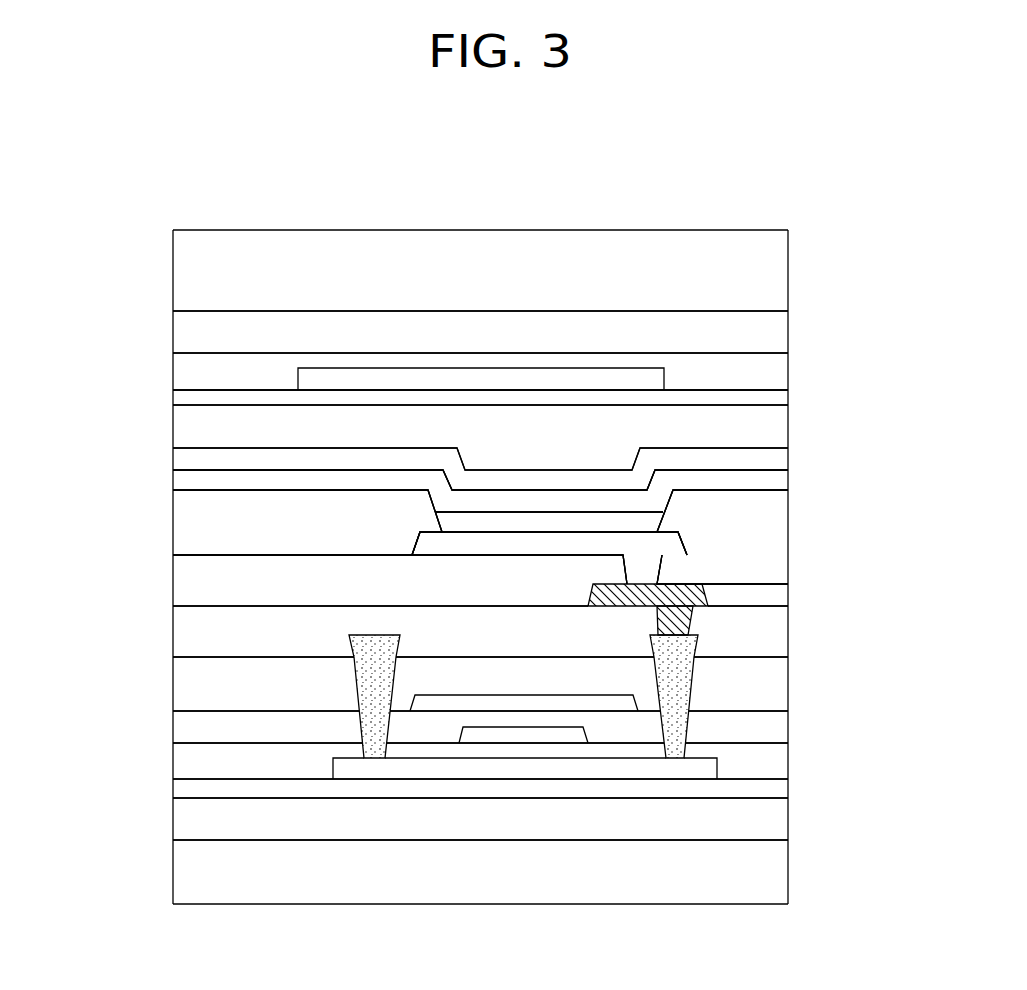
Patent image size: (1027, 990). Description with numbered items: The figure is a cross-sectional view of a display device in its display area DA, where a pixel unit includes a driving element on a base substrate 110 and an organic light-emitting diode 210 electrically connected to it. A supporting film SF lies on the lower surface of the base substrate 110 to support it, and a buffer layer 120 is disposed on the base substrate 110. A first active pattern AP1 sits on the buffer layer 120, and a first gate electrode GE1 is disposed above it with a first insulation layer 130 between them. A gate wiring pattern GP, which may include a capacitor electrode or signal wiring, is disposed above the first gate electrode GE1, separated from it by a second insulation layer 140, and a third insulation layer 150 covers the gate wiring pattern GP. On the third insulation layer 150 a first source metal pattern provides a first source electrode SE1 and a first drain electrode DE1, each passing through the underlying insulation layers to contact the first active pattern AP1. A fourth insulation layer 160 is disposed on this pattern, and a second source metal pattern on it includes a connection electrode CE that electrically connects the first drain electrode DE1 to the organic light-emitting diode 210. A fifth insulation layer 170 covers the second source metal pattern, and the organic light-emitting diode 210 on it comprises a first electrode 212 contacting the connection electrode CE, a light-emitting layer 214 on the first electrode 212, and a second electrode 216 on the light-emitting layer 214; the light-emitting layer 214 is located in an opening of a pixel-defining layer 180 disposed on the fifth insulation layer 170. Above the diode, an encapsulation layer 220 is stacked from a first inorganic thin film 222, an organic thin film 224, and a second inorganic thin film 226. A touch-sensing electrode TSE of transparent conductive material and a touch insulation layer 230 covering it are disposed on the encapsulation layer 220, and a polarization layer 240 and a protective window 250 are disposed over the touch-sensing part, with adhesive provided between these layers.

The protective window 250 is at (781, 271).
The polarization layer 240 is at (781, 333).
The touch insulation layer 230 is at (179, 368).
The second inorganic thin film 226 is at (781, 398).
The organic thin film 224 is at (781, 428).
The first inorganic thin film 222 is at (781, 461).
The encapsulation layer 220 is at (866, 385).
The second electrode 216 is at (179, 476).
The light-emitting layer 214 is at (450, 525).
The first electrode 212 is at (425, 543).
The organic light-emitting diode 210 is at (97, 468).
The pixel-defining layer 180 is at (781, 521).
The fifth insulation layer 170 is at (781, 561).
The connection electrode CE is at (700, 590).
The fourth insulation layer 160 is at (781, 633).
The third insulation layer 150 is at (179, 681).
The second insulation layer 140 is at (179, 723).
The first insulation layer 130 is at (781, 756).
The buffer layer 120 is at (781, 789).
The base substrate 110 is at (781, 821).
The supporting film SF is at (781, 873).
The touch-sensing electrode TSE is at (467, 380).
The display area DA is at (490, 145).
The first source electrode SE1 is at (383, 700).
The first drain electrode DE1 is at (680, 700).
The gate wiring pattern GP is at (443, 703).
The first gate electrode GE1 is at (513, 740).
The first active pattern AP1 is at (575, 772).